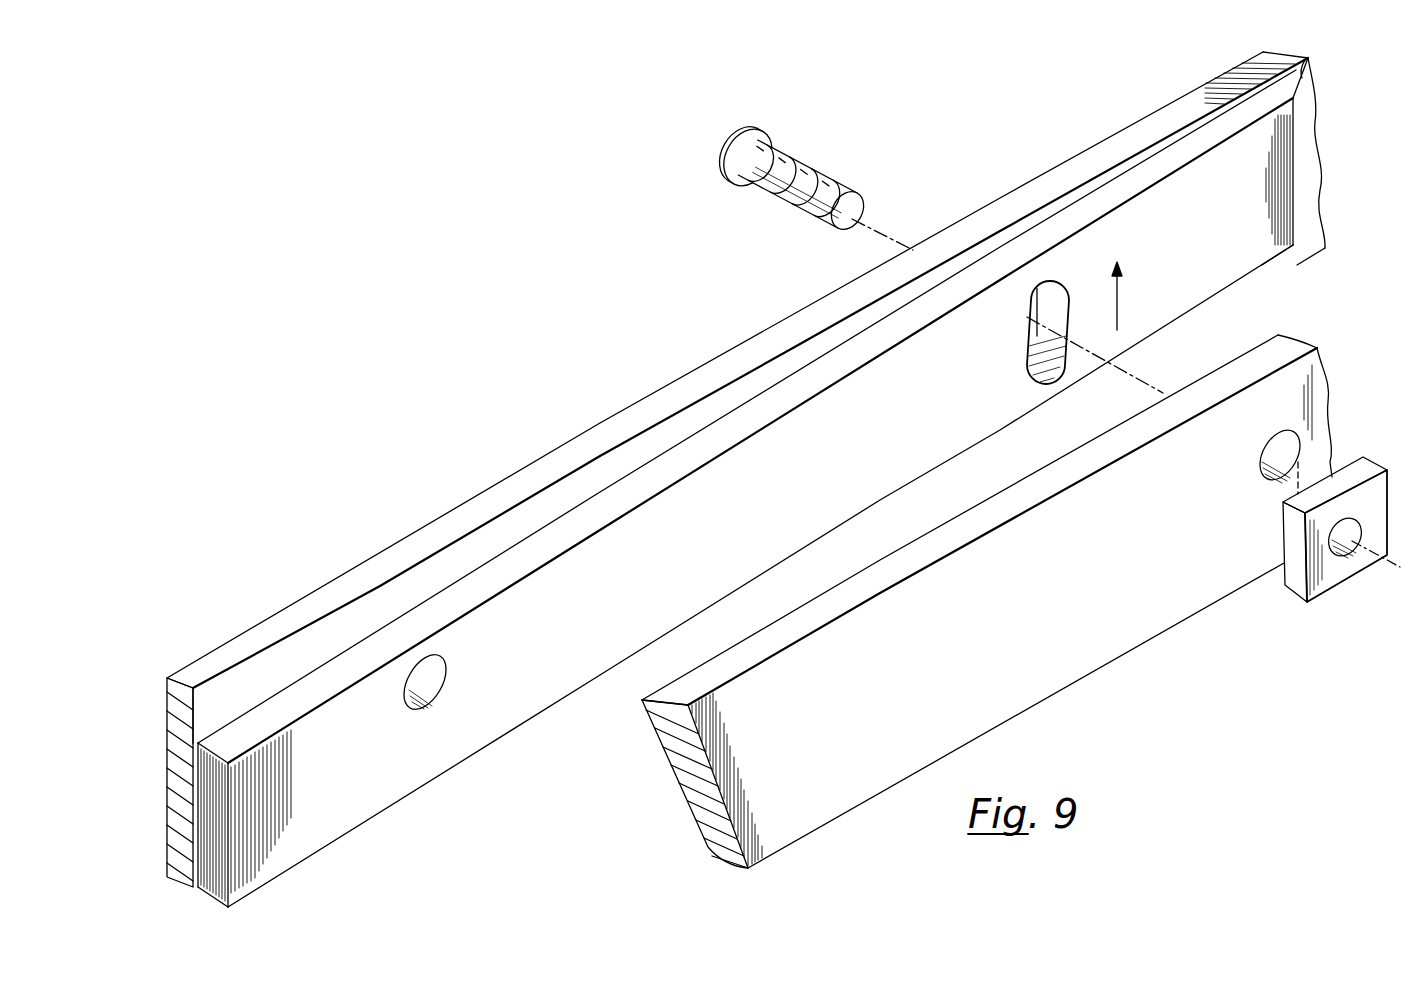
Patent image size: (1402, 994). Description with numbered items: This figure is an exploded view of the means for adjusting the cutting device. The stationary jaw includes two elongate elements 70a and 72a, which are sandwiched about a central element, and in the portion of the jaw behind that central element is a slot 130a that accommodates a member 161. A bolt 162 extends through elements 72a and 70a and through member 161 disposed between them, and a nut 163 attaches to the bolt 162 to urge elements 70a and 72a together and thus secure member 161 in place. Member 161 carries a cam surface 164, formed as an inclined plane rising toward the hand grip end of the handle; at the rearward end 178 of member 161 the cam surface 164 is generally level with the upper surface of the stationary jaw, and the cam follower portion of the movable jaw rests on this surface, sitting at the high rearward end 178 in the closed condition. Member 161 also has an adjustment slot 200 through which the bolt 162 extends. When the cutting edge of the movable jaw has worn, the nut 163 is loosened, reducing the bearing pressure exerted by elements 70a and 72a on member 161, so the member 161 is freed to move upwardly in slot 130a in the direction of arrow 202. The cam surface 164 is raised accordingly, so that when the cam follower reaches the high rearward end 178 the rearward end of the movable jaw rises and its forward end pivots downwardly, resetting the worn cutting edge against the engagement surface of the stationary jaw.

The slot 130a is at (1260, 51).
The elongate element 72a is at (1103, 147).
The member 161 is at (795, 512).
The rearward end 178 is at (1295, 136).
The cam surface 164 is at (1055, 222).
The adjustment slot 200 is at (1030, 335).
The arrow 202 is at (1118, 300).
The bolt 162 is at (857, 196).
The elongate element 70a is at (968, 631).
The nut 163 is at (1295, 551).